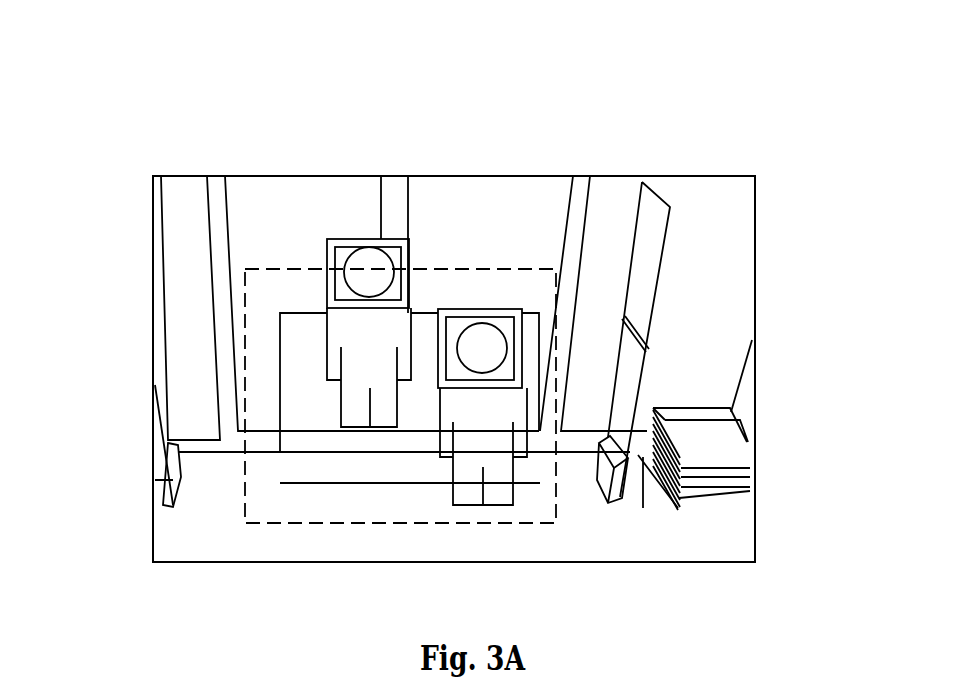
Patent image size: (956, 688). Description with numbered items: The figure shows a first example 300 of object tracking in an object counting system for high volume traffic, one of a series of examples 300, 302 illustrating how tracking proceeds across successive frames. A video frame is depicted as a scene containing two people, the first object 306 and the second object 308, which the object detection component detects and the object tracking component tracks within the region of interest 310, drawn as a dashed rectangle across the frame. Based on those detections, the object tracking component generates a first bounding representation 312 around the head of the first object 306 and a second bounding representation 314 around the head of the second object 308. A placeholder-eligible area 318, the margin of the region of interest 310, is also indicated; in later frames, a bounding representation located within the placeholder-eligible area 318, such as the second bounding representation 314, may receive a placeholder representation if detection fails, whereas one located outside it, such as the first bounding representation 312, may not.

The first example object tracking 300 is at (78, 57).
The second example object tracking 302 is at (48, 687).
The first object 306 is at (331, 320).
The second object 308 is at (503, 442).
The region of interest 310 is at (502, 268).
The first bounding representation 312 is at (338, 245).
The second bounding representation 314 is at (523, 335).
The placeholder-eligible area 318 is at (283, 447).